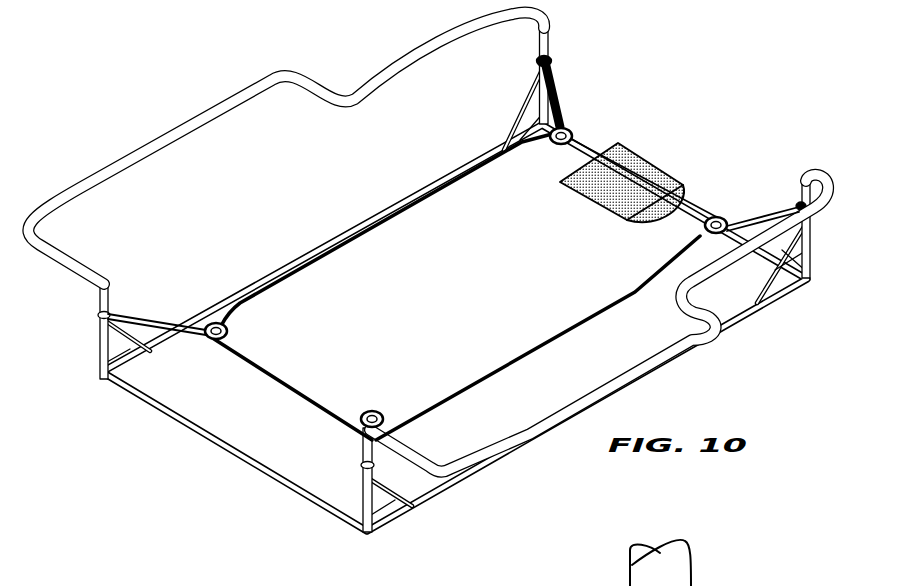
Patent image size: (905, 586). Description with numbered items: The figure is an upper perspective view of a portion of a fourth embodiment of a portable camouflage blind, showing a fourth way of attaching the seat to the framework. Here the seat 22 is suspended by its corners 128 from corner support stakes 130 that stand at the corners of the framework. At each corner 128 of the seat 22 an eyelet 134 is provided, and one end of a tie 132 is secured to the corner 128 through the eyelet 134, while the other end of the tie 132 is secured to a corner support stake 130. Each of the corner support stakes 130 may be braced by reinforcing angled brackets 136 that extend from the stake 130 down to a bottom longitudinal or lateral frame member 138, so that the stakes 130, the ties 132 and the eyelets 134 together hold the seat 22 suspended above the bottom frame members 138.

The seat 22 is at (607, 290).
The corners 128 is at (244, 352).
The corner support stakes 130 is at (550, 33).
The tie 132 is at (558, 101).
The eyelet 134 is at (577, 128).
The reinforcing angled brackets 136 is at (120, 340).
The bottom longitudinal or lateral frame member 138 is at (236, 452).